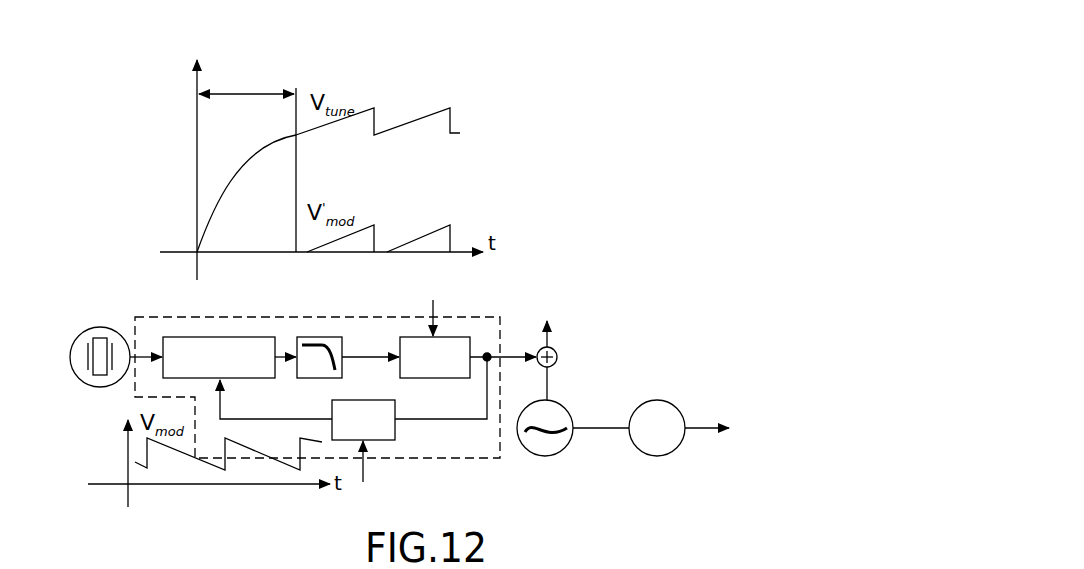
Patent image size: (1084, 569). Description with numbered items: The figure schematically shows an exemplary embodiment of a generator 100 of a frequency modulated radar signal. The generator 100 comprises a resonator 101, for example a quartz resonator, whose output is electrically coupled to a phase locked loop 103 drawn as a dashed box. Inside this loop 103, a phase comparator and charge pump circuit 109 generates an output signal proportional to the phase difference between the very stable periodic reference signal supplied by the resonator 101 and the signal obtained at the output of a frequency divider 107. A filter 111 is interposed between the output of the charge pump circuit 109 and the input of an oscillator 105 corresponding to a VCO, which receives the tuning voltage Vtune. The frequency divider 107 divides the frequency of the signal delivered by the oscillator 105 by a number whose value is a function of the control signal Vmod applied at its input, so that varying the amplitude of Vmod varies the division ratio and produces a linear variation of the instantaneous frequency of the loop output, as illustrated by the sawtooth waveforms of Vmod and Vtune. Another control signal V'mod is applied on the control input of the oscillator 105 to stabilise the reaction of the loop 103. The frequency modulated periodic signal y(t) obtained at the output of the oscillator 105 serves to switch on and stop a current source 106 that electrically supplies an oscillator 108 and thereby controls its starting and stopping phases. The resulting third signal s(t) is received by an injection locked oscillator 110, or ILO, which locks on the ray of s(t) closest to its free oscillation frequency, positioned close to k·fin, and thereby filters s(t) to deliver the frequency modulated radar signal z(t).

The generator 100 is at (657, 292).
The resonator 101 is at (88, 328).
The phase locked loop 103 is at (483, 317).
The oscillator 105 is at (450, 378).
The current source 106 is at (558, 342).
The frequency divider 107 is at (395, 427).
The oscillator 108 is at (565, 450).
The phase comparator and charge pump circuit 109 is at (228, 335).
The injection locked oscillator 110 is at (667, 402).
The filter 111 is at (315, 337).